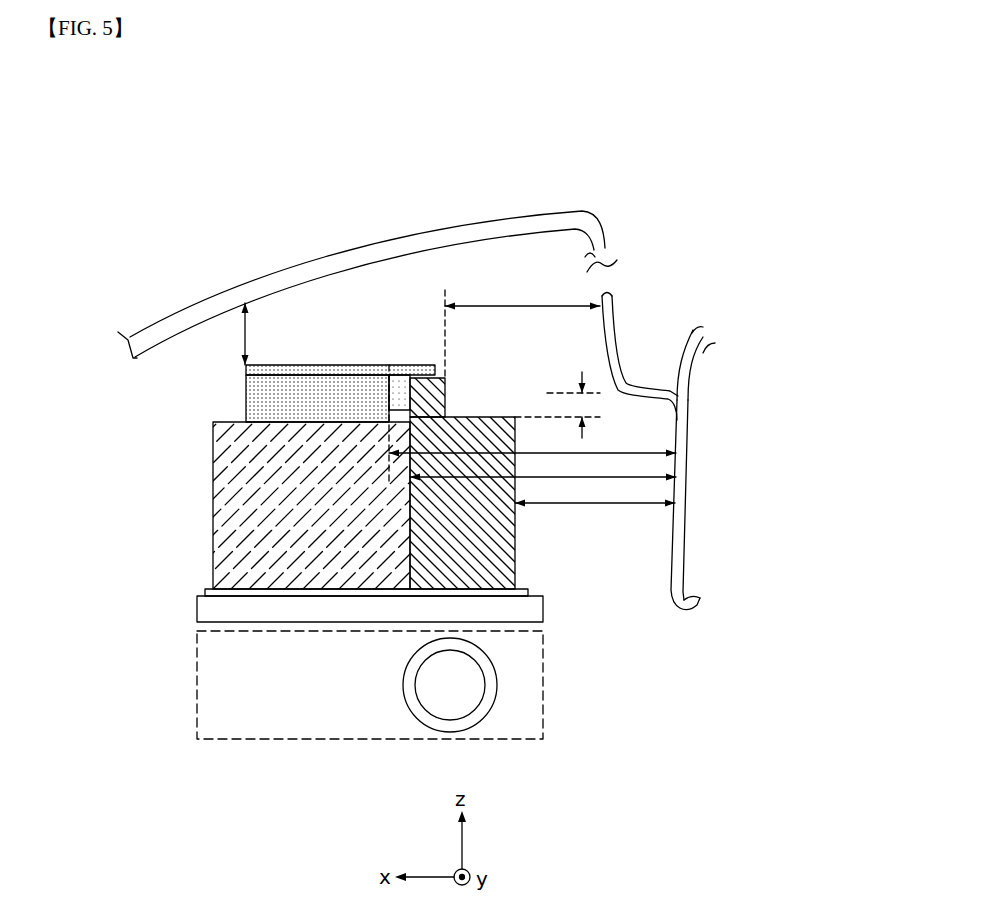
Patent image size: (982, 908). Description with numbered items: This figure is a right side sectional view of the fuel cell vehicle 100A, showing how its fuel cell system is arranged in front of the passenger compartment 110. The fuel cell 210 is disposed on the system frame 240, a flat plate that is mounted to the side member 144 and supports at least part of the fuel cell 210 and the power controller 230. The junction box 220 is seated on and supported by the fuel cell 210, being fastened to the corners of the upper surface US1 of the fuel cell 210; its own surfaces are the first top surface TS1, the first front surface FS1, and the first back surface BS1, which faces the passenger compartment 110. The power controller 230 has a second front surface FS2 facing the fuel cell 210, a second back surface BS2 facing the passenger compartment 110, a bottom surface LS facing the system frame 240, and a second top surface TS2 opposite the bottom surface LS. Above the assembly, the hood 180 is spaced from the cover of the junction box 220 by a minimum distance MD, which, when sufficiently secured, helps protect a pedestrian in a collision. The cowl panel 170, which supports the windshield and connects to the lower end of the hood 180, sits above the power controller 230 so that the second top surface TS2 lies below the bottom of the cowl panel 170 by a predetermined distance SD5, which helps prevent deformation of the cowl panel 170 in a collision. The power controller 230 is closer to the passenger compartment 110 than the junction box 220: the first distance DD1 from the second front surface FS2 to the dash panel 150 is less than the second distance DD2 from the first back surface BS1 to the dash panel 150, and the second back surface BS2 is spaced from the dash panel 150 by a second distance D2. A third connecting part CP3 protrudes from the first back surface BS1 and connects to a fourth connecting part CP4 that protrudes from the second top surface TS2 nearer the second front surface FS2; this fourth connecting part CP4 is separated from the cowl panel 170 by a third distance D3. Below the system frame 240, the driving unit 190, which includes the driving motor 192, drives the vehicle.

The fuel cell vehicle 100A is at (438, 155).
The passenger compartment 110 is at (757, 480).
The side member 144 is at (543, 615).
The dash panel 150 is at (678, 565).
The cowl panel 170 is at (607, 319).
The hood 180 is at (540, 216).
The driving unit 190 is at (545, 713).
The driving motor 192 is at (497, 685).
The fuel cell 210 is at (213, 520).
The junction box 220 is at (358, 385).
The power controller 230 is at (515, 542).
The system frame 240 is at (528, 592).
The minimum distance MD is at (260, 334).
The first top surface TS1 is at (306, 365).
The first back surface BS1 is at (400, 363).
The third connecting part CP3 is at (433, 372).
The fourth connecting part CP4 is at (445, 384).
The second top surface TS2 is at (490, 415).
The second back surface BS2 is at (515, 432).
The first front surface FS1 is at (246, 393).
The upper surface US1 is at (213, 422).
The second front surface FS2 is at (410, 540).
The bottom surface LS is at (500, 587).
The second distance D2 is at (595, 514).
The third distance D3 is at (522, 294).
The first distance DD1 is at (543, 488).
The second distance DD2 is at (532, 464).
The predetermined distance SD5 is at (599, 405).